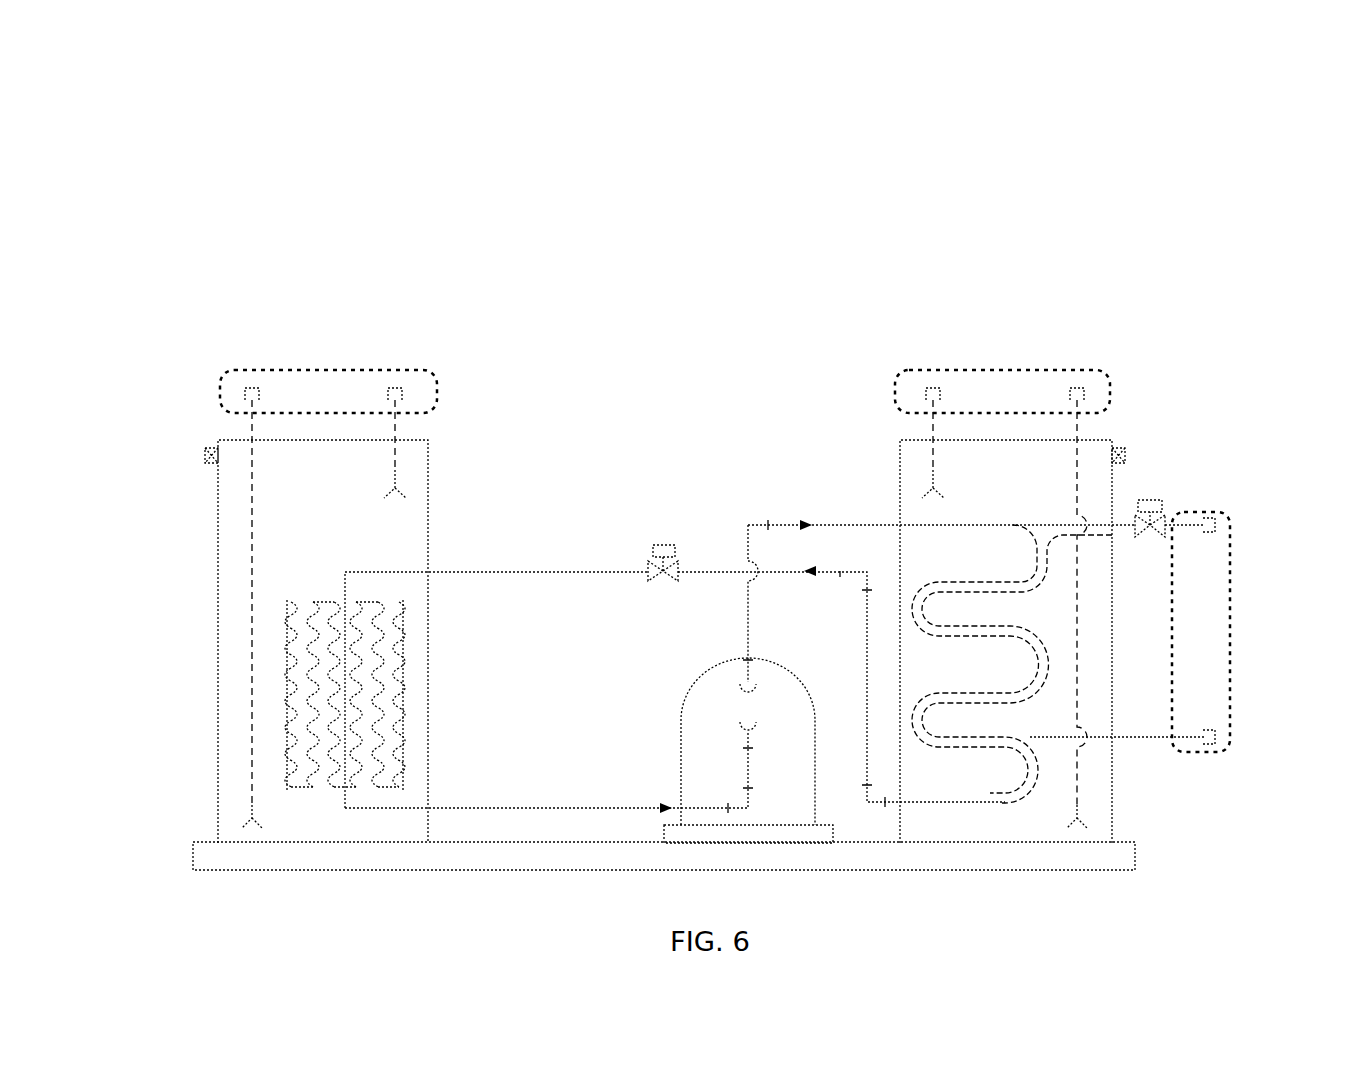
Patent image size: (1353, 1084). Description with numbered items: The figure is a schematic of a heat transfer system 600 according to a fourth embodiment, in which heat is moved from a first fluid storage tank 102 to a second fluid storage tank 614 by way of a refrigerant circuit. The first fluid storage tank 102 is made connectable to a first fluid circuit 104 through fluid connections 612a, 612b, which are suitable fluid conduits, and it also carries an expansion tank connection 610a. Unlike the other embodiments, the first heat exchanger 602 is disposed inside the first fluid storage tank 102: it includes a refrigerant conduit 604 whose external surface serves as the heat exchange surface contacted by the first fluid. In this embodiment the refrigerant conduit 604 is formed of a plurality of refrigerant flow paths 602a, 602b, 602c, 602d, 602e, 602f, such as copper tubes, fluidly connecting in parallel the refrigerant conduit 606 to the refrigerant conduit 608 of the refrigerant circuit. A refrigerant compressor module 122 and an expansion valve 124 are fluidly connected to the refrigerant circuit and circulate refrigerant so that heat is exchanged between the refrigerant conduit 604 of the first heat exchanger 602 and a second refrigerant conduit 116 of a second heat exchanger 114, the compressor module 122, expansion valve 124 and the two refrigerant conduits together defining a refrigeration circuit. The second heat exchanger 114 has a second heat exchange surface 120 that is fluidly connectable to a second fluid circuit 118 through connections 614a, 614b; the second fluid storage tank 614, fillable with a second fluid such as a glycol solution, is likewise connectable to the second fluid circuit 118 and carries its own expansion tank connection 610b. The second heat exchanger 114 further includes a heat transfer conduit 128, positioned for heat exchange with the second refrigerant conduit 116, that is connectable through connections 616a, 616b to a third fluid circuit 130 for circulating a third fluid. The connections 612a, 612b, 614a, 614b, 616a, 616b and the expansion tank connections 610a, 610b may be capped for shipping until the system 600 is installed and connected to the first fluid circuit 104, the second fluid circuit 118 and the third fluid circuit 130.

The heat transfer system 600 is at (194, 85).
The first fluid storage tank 102 is at (240, 470).
The first fluid circuit 104 is at (418, 368).
The fluid connection 612a is at (247, 390).
The fluid connection 612b is at (388, 391).
The expansion tank connection 610a is at (207, 456).
The first heat exchanger 602 is at (278, 664).
The refrigerant flow path 602a is at (293, 652).
The refrigerant flow path 602b is at (307, 747).
The refrigerant flow path 602c is at (327, 775).
The refrigerant flow path 602d is at (353, 637).
The refrigerant flow path 602e is at (378, 777).
The refrigerant flow path 602f is at (399, 777).
The refrigerant conduit 604 is at (294, 713).
The refrigerant conduit 606 is at (470, 571).
The refrigerant conduit 608 is at (563, 810).
The expansion valve 124 is at (662, 543).
The refrigerant compressor module 122 is at (695, 782).
The second heat exchange surface 120 is at (979, 518).
The second fluid storage tank 614 is at (1045, 806).
The second fluid circuit 118 is at (1068, 368).
The connection 614a is at (931, 391).
The connection 614b is at (1074, 391).
The expansion tank connection 610b is at (1125, 460).
The second refrigerant conduit 116 is at (1010, 527).
The second heat exchanger 114 is at (963, 665).
The third fluid circuit 130 is at (1231, 602).
The connection 616a is at (1213, 527).
The connection 616b is at (1210, 733).
The heat transfer conduit 128 is at (1028, 737).